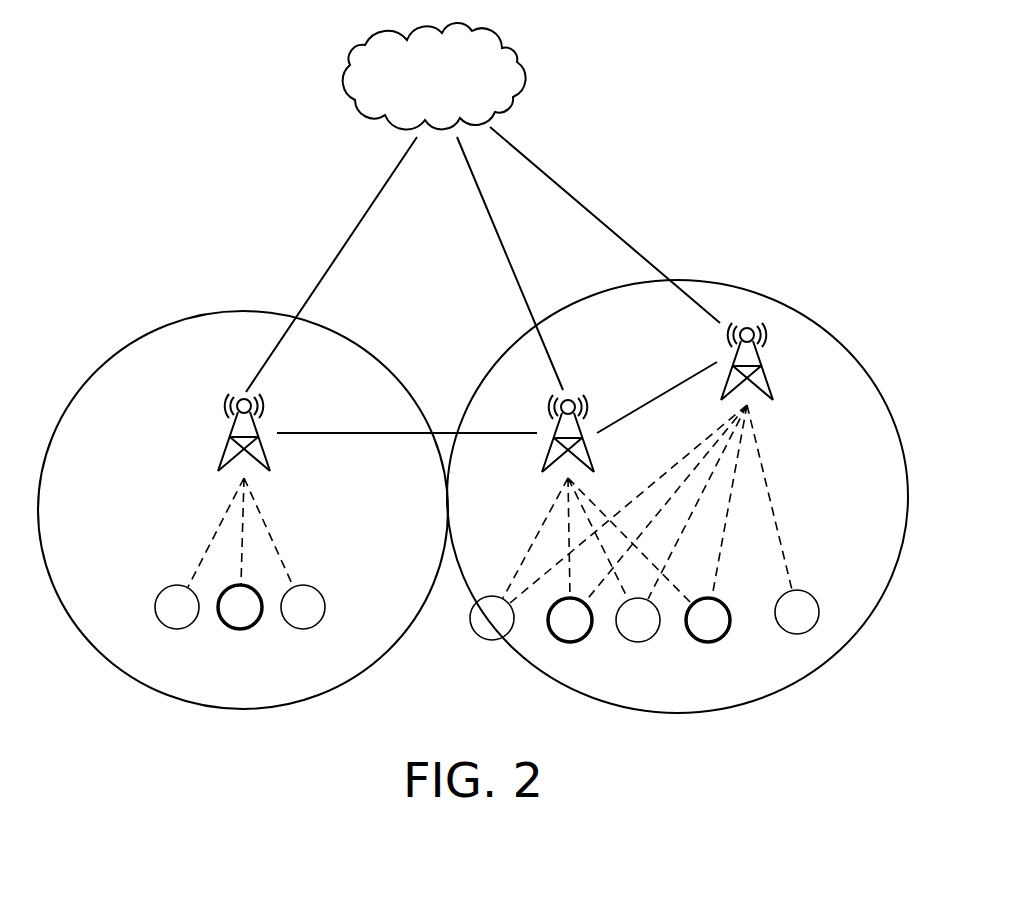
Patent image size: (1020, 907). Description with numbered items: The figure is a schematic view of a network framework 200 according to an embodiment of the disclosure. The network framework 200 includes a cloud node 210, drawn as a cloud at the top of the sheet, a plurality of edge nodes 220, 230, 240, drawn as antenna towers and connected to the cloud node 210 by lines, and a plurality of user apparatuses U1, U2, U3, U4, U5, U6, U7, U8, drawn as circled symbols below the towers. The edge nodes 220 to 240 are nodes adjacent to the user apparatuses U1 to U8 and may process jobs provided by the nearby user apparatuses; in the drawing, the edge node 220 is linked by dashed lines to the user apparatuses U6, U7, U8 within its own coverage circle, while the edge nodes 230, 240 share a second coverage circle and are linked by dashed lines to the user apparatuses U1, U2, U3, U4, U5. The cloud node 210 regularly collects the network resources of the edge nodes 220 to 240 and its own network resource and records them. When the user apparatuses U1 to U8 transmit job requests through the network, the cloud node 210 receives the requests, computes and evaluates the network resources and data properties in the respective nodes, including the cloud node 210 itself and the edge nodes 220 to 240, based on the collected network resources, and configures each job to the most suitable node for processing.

The network framework 200 is at (879, 761).
The cloud node 210 is at (524, 75).
The edge node 220 is at (226, 401).
The edge node 230 is at (542, 403).
The edge node 240 is at (748, 320).
The user apparatus U1 is at (797, 634).
The user apparatus U2 is at (708, 642).
The user apparatus U3 is at (638, 642).
The user apparatus U4 is at (570, 642).
The user apparatus U5 is at (492, 640).
The user apparatus U6 is at (303, 629).
The user apparatus U7 is at (240, 629).
The user apparatus U8 is at (177, 629).